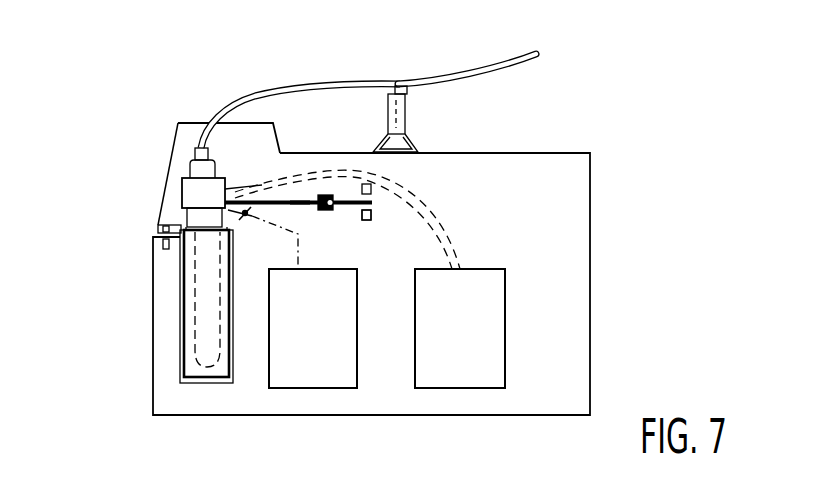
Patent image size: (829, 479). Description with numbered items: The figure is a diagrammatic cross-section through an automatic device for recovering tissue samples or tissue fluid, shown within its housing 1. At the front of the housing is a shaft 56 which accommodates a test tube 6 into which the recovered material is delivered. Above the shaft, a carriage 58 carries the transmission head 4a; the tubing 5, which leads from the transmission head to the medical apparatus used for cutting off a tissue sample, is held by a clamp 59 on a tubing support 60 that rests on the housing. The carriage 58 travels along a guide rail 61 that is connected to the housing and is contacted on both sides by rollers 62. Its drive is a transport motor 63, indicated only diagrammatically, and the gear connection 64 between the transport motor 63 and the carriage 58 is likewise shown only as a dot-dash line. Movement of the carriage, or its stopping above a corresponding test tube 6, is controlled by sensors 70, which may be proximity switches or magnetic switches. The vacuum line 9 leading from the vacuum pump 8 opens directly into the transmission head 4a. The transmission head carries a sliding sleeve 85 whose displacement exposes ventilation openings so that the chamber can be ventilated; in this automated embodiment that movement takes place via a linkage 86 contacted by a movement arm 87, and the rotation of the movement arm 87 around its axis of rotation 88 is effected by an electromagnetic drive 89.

The housing 1 is at (547, 153).
The tubing 5 is at (456, 74).
The carriage 58 is at (192, 123).
The clamp 59 is at (399, 86).
The tubing support 60 is at (400, 124).
The sliding sleeve 85 is at (190, 181).
The transmission head 4a is at (200, 196).
The sensors 70 is at (163, 243).
The shaft 56 is at (182, 339).
The test tube 6 is at (192, 279).
The rollers 62 is at (251, 198).
The axis of rotation 88 is at (335, 195).
The linkage 86 is at (298, 205).
The movement arm 87 is at (352, 207).
The electromagnetic drive 89 is at (372, 215).
The vacuum line 9 is at (438, 212).
The guide rail 61 is at (240, 218).
The gear connection 64 is at (302, 262).
The transport motor 63 is at (322, 343).
The vacuum pump 8 is at (462, 343).